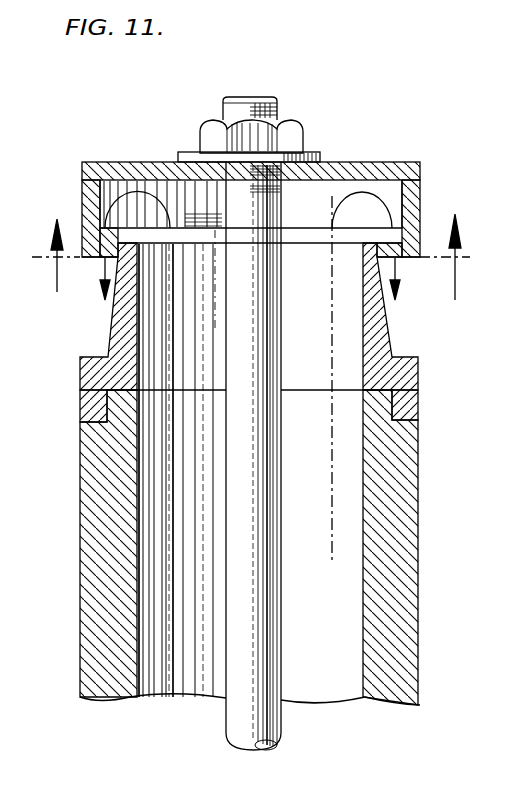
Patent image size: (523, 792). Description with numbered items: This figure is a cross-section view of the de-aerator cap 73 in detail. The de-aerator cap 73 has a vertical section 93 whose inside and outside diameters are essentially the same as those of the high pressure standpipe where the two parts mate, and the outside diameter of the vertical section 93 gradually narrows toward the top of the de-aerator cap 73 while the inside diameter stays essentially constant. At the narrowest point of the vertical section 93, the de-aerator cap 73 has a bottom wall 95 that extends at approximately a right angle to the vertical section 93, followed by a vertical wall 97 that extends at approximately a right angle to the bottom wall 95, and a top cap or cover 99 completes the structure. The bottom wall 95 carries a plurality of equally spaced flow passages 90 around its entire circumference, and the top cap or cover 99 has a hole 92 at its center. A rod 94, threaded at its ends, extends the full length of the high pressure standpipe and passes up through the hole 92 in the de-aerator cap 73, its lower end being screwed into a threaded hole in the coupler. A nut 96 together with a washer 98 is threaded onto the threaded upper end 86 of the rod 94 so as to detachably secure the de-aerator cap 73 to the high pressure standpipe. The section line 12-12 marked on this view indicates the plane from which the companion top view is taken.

The section line 12- 12 is at (260, 257).
The de-aerator cap 73 is at (432, 158).
The threaded upper end 86 is at (246, 97).
The flow passages 90 is at (113, 262).
The hole 92 is at (203, 191).
The vertical section 93 is at (385, 330).
The rod 94 is at (283, 500).
The bottom wall 95 is at (91, 258).
The nut 96 is at (291, 128).
The vertical wall 97 is at (82, 190).
The washer 98 is at (318, 153).
The top cap or cover 99 is at (362, 163).